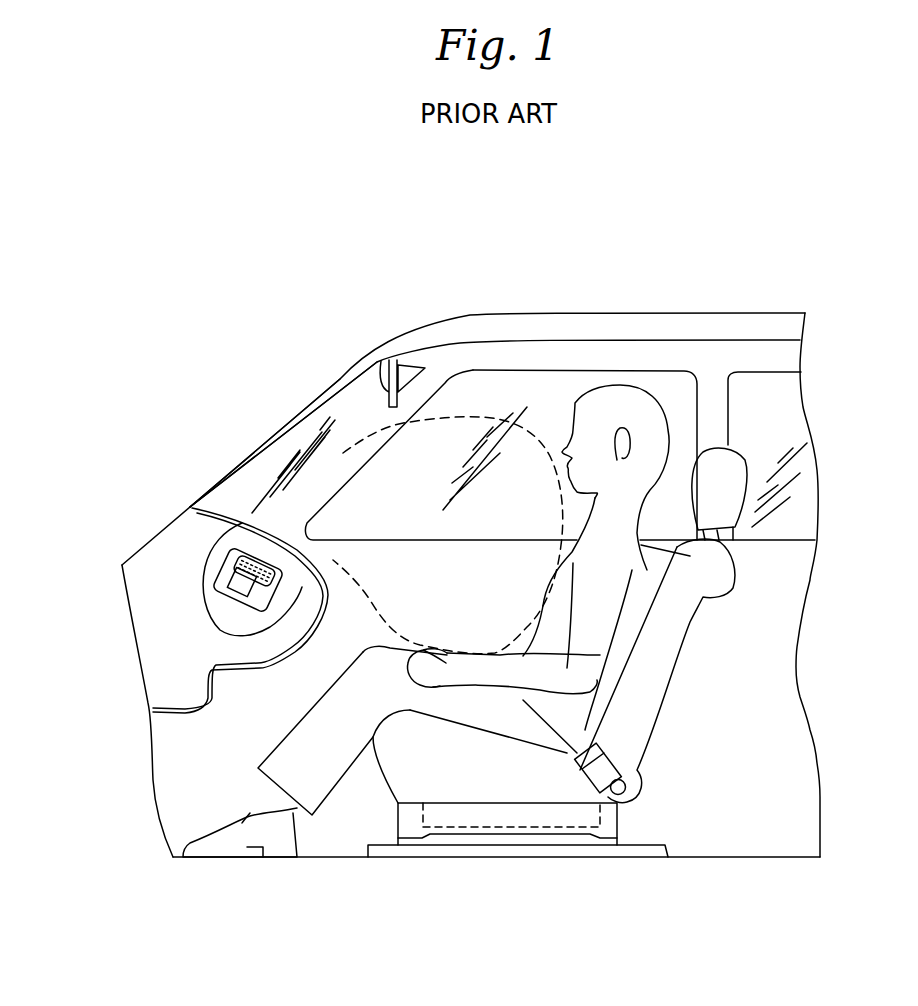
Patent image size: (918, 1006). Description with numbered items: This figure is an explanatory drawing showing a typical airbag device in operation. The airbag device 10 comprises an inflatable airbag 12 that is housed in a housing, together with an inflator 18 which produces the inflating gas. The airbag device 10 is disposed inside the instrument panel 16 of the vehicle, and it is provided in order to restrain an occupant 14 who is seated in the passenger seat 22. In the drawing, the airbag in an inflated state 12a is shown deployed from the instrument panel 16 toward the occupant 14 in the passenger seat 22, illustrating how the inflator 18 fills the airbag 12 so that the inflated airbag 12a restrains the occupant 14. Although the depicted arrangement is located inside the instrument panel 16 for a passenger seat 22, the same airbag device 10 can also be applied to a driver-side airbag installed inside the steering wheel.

The airbag device 10 is at (168, 544).
The airbag 12 is at (241, 523).
The airbag in an inflated state 12a is at (483, 412).
The occupant 14 is at (627, 385).
The instrument panel 16 is at (170, 546).
The inflator 18 is at (207, 598).
The passenger seat 22 is at (680, 658).